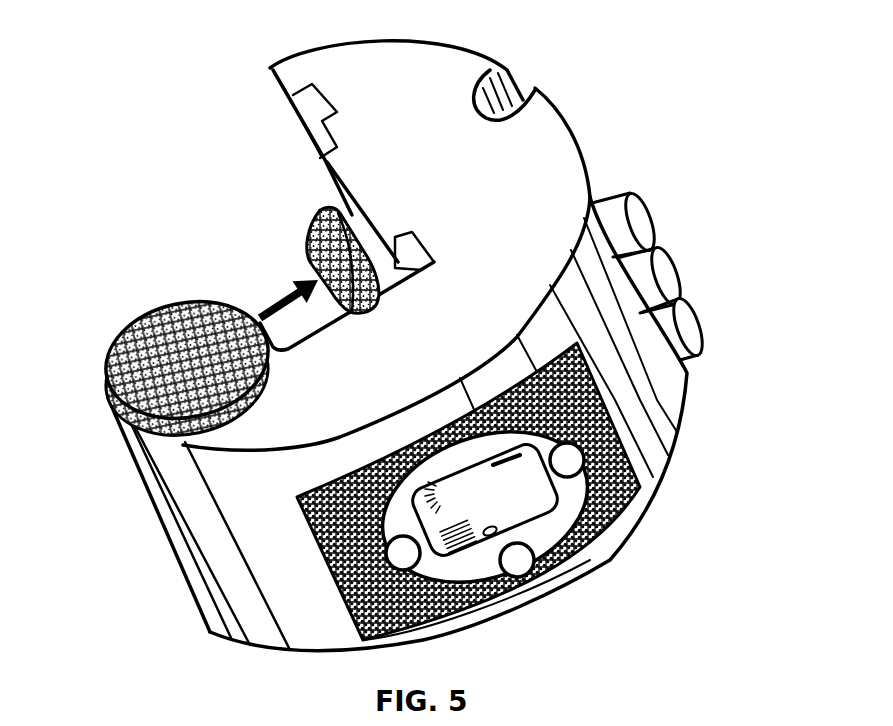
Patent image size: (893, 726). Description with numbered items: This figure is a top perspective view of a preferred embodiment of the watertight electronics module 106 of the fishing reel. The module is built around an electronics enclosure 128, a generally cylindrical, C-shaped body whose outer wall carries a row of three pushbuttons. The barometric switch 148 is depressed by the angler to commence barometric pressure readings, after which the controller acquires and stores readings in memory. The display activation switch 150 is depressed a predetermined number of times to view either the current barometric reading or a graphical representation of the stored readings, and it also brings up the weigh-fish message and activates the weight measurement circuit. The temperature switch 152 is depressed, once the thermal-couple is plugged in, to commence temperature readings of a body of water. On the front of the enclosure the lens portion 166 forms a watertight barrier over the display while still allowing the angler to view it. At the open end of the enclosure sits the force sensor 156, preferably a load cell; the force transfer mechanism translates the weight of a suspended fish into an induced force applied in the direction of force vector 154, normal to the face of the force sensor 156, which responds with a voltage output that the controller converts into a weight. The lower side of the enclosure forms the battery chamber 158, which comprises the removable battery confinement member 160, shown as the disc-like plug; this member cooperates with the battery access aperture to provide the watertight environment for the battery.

The watertight electronics module 106 is at (458, 42).
The electronics enclosure 128 is at (668, 397).
The barometric switch 148 is at (640, 210).
The display activation switch 150 is at (667, 268).
The temperature switch 152 is at (688, 322).
The force vector 154 is at (263, 320).
The force sensor 156 is at (310, 233).
The battery chamber 158 is at (163, 552).
The removable battery confinement member 160 is at (117, 380).
The lens portion 166 is at (430, 616).